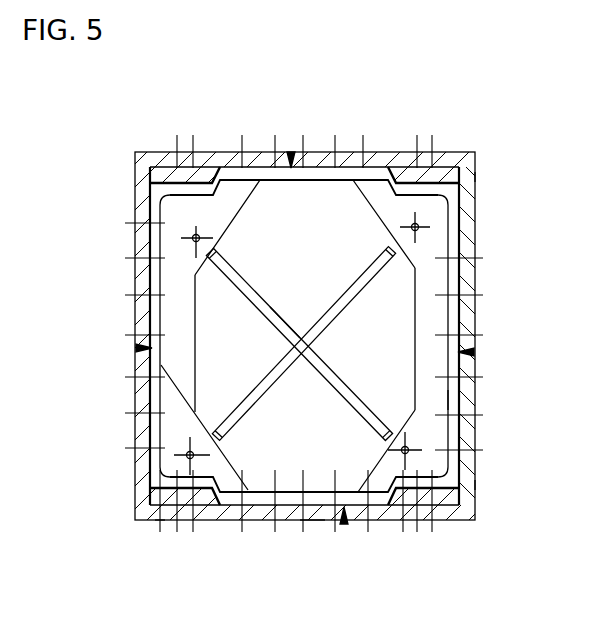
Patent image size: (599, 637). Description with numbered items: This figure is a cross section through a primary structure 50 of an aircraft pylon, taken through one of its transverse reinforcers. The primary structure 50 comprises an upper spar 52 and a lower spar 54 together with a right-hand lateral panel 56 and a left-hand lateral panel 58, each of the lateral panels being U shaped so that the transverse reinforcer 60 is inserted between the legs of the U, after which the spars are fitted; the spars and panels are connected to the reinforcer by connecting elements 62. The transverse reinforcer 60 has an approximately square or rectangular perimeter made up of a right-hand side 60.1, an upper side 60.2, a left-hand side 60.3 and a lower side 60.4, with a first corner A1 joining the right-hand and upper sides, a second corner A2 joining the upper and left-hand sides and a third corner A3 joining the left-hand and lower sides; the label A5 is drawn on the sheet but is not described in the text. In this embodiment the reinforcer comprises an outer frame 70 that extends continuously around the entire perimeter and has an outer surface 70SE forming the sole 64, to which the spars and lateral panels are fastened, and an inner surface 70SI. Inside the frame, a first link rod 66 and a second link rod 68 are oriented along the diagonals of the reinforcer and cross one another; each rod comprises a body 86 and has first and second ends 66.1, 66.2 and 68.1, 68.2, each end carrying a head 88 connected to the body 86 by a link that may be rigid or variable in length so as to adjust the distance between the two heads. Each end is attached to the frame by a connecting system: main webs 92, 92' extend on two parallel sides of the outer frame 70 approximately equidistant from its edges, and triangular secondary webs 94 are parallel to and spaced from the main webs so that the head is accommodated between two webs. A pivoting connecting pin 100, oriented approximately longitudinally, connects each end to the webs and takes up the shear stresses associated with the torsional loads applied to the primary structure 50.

The primary structure 50 is at (400, 148).
The upper spar 52 is at (318, 165).
The lower spar 54 is at (375, 520).
The right-hand lateral panel 56 is at (467, 315).
The left-hand lateral panel 58 is at (137, 390).
The transverse reinforcer 60 is at (307, 328).
The right-hand side 60.1 is at (468, 283).
The upper side 60.2 is at (352, 165).
The left-hand side 60.3 is at (135, 308).
The lower side 60.4 is at (287, 522).
The connecting element 62 is at (224, 180).
The sole 64 is at (291, 152).
The first link rod 66 is at (301, 326).
The first end of the first link rod 66.1 is at (380, 260).
The second end of the first link rod 66.2 is at (228, 425).
The second link rod 68 is at (302, 329).
The first end of the second link rod 68.1 is at (225, 258).
The second end of the second link rod 68.2 is at (383, 428).
The outer frame 70 is at (470, 238).
The inner surface 70SI is at (293, 490).
The outer surface 70SE is at (312, 522).
The body 86 is at (288, 322).
The head 88 is at (450, 400).
The main web 92 is at (210, 343).
The main web 92' is at (378, 339).
The secondary web 94 is at (432, 165).
The pivoting connecting pin 100 is at (196, 226).
The first corner A1 is at (476, 177).
The second corner A2 is at (152, 182).
The third corner A3 is at (160, 533).
The axis A5 is at (474, 485).